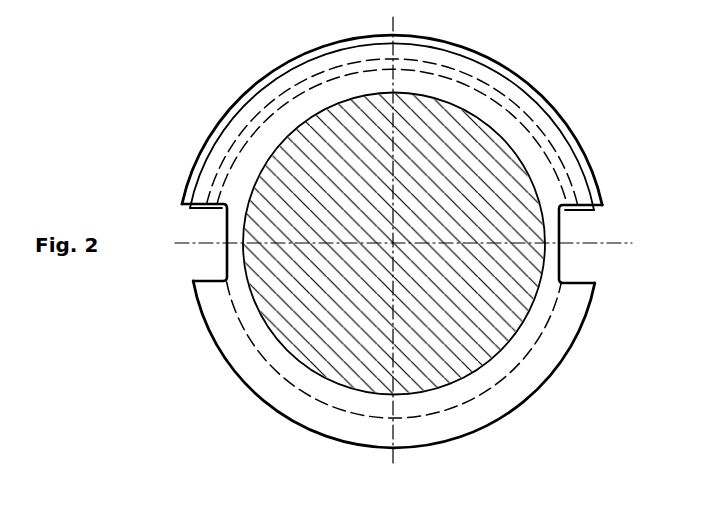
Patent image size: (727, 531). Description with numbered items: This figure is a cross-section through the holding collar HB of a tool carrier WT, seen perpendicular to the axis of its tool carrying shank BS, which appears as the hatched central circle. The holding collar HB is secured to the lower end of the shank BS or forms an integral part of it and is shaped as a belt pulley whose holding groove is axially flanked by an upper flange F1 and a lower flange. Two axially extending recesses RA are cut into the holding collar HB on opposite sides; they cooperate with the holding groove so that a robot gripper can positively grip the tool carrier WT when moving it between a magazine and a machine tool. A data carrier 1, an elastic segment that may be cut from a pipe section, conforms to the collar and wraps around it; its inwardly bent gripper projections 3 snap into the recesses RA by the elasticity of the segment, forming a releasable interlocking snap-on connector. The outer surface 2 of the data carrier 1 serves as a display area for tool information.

The data carrier 1 is at (566, 125).
The outer surface 2 is at (496, 59).
The gripper projections 3 is at (208, 218).
The recesses RA is at (208, 267).
The tool carrier WT is at (250, 390).
The holding collar HB is at (471, 432).
The tool carrying shank BS is at (477, 350).
The upper flange F1 is at (570, 333).